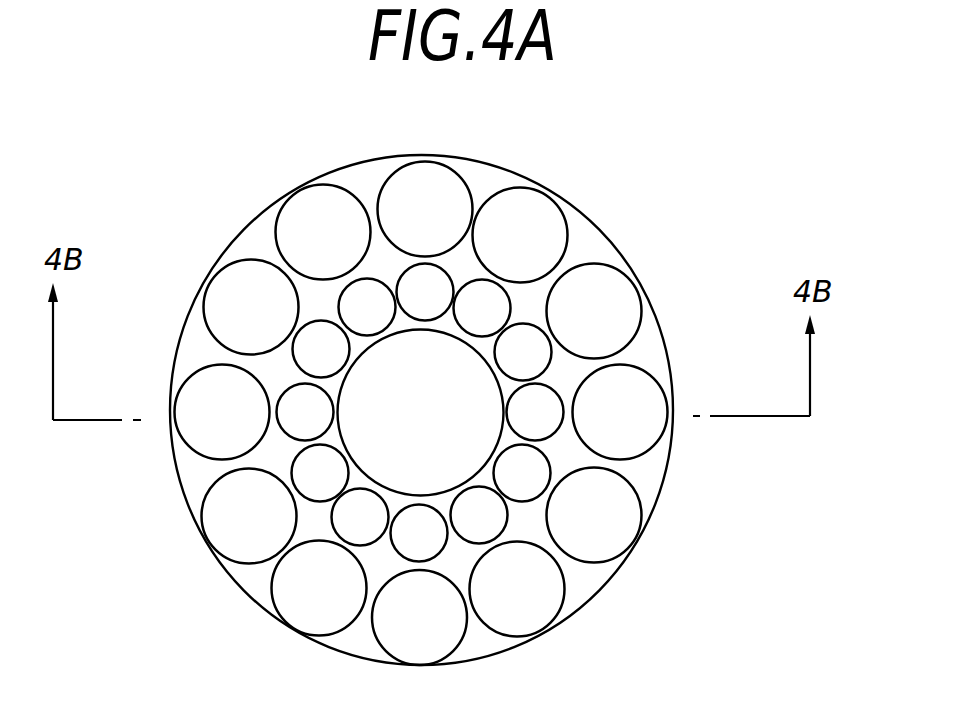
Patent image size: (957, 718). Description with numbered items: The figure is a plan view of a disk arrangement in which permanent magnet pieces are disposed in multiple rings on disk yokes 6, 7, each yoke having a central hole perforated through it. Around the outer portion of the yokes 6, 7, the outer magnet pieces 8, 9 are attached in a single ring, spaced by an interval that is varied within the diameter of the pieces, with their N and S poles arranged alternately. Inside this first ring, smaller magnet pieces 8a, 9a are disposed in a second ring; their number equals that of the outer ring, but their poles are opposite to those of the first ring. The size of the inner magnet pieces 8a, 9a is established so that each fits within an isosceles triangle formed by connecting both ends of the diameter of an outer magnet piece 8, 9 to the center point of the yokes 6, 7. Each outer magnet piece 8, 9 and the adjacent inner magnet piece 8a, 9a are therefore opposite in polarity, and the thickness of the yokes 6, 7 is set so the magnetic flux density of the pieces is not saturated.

The yoke 6 is at (495, 410).
The yoke 7 is at (650, 468).
The magnet piece 8 is at (483, 414).
The magnet piece 9 is at (628, 510).
The smaller magnet piece 8a is at (539, 469).
The smaller magnet piece 9a is at (523, 497).